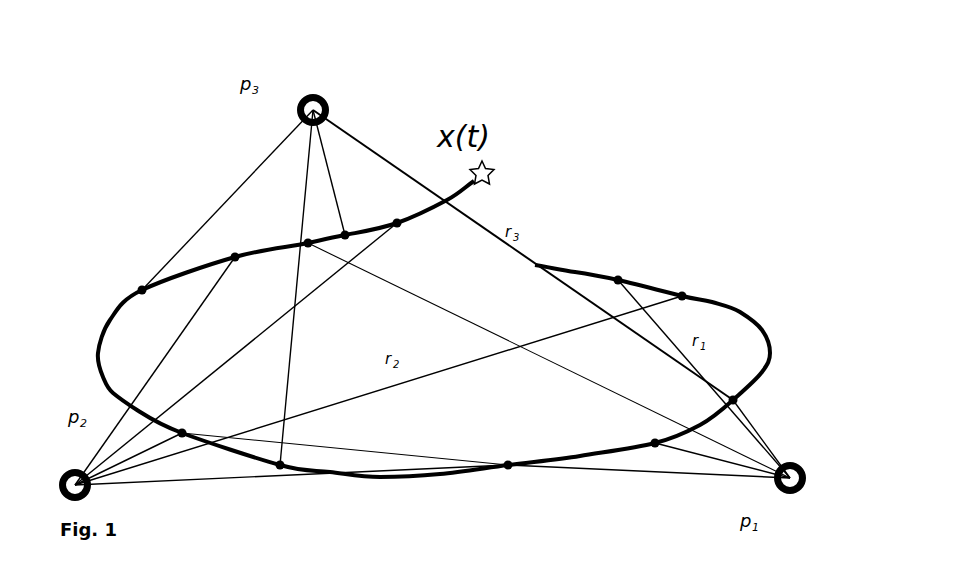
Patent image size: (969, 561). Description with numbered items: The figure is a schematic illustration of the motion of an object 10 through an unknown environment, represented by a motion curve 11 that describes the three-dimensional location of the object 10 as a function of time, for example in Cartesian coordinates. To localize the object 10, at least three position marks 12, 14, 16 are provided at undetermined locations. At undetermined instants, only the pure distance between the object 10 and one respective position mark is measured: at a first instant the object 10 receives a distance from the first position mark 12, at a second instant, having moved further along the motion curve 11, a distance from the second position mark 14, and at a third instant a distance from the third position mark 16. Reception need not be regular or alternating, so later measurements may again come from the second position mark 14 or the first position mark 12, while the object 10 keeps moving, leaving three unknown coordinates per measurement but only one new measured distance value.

The object 10 is at (493, 172).
The motion curve 11 is at (755, 322).
The first position mark 12 is at (800, 460).
The second position mark 14 is at (93, 493).
The third position mark 16 is at (330, 102).